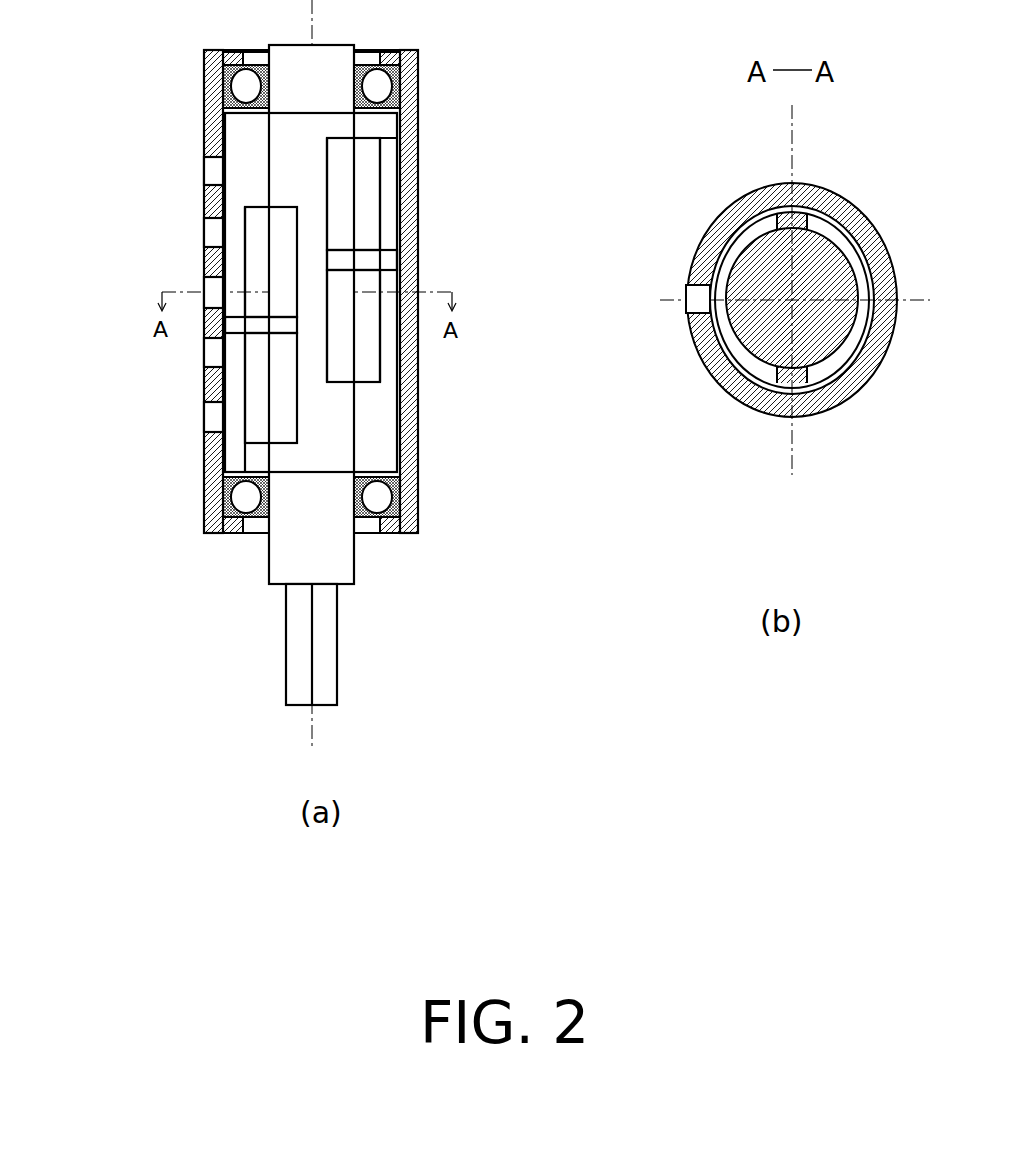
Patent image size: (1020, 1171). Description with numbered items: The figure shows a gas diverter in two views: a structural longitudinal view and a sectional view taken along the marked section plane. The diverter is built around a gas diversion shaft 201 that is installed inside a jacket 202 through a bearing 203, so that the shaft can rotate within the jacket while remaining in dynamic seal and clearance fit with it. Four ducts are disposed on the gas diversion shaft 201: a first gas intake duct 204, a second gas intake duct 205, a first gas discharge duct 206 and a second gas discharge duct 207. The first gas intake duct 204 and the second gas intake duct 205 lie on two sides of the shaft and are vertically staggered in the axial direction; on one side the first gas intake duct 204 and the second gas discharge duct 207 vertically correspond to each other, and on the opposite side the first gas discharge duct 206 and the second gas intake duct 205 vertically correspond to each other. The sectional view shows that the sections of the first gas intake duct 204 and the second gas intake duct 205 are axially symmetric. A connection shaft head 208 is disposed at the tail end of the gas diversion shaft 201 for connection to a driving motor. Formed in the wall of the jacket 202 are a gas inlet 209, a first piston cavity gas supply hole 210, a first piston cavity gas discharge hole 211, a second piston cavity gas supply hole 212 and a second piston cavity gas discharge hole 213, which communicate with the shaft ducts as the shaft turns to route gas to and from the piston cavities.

The gas diversion shaft 201 is at (295, 157).
The jacket 202 is at (212, 500).
The bearing 203 is at (381, 501).
The first gas intake duct 204 is at (270, 236).
The second gas intake duct 205 is at (353, 315).
The first gas discharge duct 206 is at (358, 233).
The second gas discharge duct 207 is at (278, 422).
The connection shaft head 208 is at (324, 630).
The gas inlet 209 is at (213, 292).
The first piston cavity gas supply hole 210 is at (213, 233).
The first piston cavity gas discharge hole 211 is at (213, 172).
The second piston cavity gas supply hole 212 is at (213, 353).
The second piston cavity gas discharge hole 213 is at (213, 418).